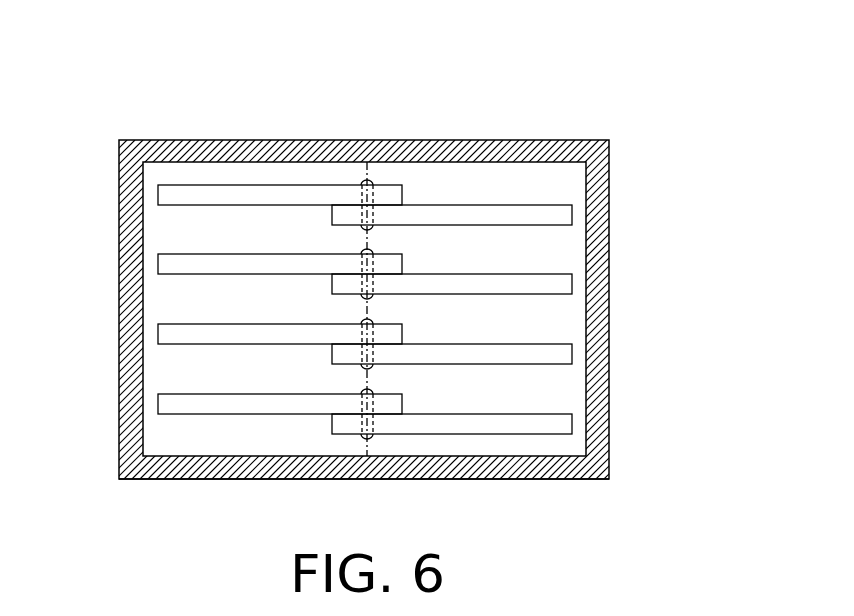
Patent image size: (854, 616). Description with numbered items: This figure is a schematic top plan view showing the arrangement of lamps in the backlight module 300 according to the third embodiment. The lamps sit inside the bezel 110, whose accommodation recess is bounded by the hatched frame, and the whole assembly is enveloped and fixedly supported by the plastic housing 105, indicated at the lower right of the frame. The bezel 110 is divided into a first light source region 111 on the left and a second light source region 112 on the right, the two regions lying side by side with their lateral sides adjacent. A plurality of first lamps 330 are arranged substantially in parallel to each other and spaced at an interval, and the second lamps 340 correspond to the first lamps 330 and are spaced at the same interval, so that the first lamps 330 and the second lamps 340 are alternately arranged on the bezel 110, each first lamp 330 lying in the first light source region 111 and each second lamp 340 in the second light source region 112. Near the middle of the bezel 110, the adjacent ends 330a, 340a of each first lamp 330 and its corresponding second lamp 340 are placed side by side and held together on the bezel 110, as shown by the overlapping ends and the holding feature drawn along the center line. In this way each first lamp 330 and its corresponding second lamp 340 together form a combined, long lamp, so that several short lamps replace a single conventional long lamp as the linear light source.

The backlight module 300 is at (710, 47).
The plastic housing 105 is at (608, 463).
The bezel 110 is at (573, 173).
The first light source region 111 is at (250, 170).
The second light source region 112 is at (516, 168).
The first lamp 330 is at (175, 199).
The adjacent end of first lamp 330a is at (390, 187).
The second lamp 340 is at (556, 213).
The adjacent end of second lamp 340a is at (348, 212).